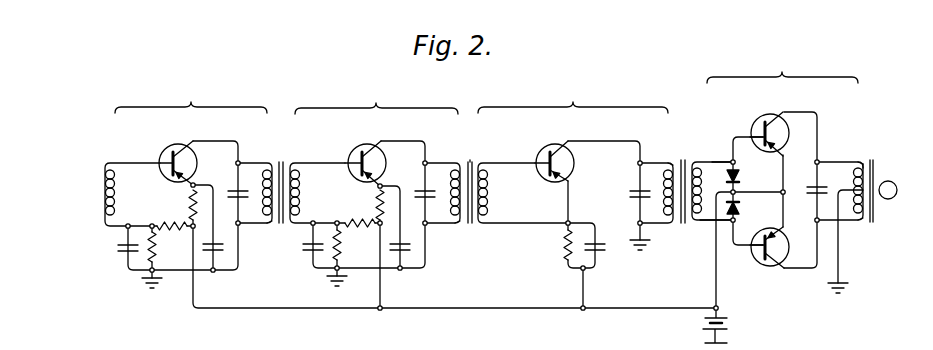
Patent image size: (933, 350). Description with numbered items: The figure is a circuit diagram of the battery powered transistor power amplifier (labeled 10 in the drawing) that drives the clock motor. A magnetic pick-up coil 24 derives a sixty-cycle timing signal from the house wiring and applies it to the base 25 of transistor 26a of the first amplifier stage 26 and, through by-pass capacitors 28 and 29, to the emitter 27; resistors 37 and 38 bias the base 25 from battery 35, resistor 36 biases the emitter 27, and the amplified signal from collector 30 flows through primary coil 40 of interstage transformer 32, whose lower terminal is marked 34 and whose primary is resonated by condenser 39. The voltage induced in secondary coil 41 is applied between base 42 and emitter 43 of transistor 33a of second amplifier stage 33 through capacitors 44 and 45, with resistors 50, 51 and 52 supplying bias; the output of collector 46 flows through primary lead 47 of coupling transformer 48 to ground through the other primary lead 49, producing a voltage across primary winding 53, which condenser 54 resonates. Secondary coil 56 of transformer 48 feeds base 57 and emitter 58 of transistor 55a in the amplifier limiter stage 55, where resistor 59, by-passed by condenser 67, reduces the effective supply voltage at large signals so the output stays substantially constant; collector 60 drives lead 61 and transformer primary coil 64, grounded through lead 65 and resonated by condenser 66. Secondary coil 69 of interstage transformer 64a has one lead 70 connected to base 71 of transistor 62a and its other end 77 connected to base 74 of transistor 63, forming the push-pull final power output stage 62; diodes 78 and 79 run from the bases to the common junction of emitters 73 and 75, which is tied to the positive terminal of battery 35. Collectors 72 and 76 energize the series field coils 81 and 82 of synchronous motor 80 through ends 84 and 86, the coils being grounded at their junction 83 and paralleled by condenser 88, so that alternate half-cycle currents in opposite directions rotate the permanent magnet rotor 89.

The receiver circuit 10 is at (610, 343).
The magnetic pick-up coil 24 is at (103, 188).
The base 25 is at (170, 158).
The first amplifier stage 26 is at (191, 97).
The transistor 26a is at (174, 143).
The emitter 27 is at (170, 177).
The by-pass capacitor 28 is at (124, 250).
The by-pass capacitor 29 is at (216, 243).
The collector 30 is at (190, 155).
The interstage transformer 32 is at (281, 160).
The second amplifier stage 33 is at (376, 98).
The transistor 33a is at (367, 144).
The primary winding terminal 34 is at (268, 224).
The battery 35 is at (730, 325).
The resistor 36 is at (190, 207).
The resistor 37 is at (163, 225).
The resistor 38 is at (158, 247).
The condenser 39 is at (236, 189).
The primary coil 40 is at (264, 206).
The secondary coil 41 is at (303, 184).
The base 42 is at (358, 157).
The emitter 43 is at (381, 170).
The capacitor 44 is at (311, 253).
The capacitor 45 is at (401, 243).
The collector 46 is at (378, 144).
The primary lead 47 is at (453, 164).
The coupling transformer 48 is at (470, 160).
The other primary lead 49 is at (456, 224).
The resistor 50 is at (377, 203).
The resistor 51 is at (352, 222).
The resistor 52 is at (345, 248).
The primary winding 53 is at (442, 193).
The condenser 54 is at (424, 190).
The amplifier limiter stage 55 is at (573, 97).
The transistor 55a is at (555, 144).
The secondary coil 56 is at (490, 193).
The base 57 is at (547, 157).
The emitter 58 is at (569, 169).
The resistor 59 is at (564, 251).
The collector 60 is at (566, 148).
The lead 61 is at (668, 163).
The final power output stage 62 is at (782, 66).
The transistor 62a is at (770, 114).
The transistor 63 is at (764, 266).
The transformer primary coil 64 is at (656, 193).
The coupling transformer 64a is at (684, 158).
The lead 65 is at (671, 226).
The condenser 66 is at (637, 190).
The condenser 67 is at (598, 243).
The secondary coil 69 is at (702, 190).
The lead 70 is at (719, 158).
The base 71 is at (761, 128).
The collector 72 is at (778, 124).
The emitter 73 is at (781, 143).
The base 74 is at (757, 251).
The emitter 75 is at (782, 233).
The collector 76 is at (779, 256).
The other end 77 is at (707, 221).
The diode 78 is at (740, 177).
The diode 79 is at (741, 210).
The synchronous motor 80 is at (873, 160).
The field coil 81 is at (860, 167).
The field coil 82 is at (856, 225).
The junction 83 is at (856, 190).
The end of coil 84 is at (864, 164).
The end of coil 86 is at (861, 221).
The condenser 88 is at (812, 188).
The permanent magnet rotor 89 is at (897, 190).